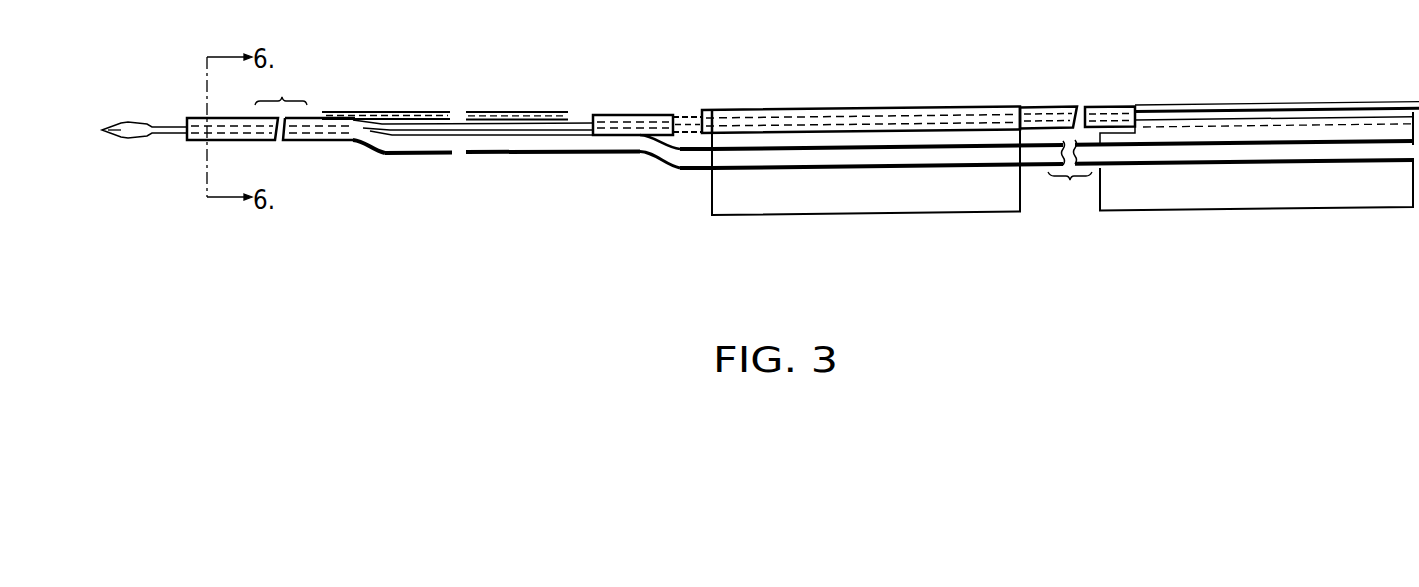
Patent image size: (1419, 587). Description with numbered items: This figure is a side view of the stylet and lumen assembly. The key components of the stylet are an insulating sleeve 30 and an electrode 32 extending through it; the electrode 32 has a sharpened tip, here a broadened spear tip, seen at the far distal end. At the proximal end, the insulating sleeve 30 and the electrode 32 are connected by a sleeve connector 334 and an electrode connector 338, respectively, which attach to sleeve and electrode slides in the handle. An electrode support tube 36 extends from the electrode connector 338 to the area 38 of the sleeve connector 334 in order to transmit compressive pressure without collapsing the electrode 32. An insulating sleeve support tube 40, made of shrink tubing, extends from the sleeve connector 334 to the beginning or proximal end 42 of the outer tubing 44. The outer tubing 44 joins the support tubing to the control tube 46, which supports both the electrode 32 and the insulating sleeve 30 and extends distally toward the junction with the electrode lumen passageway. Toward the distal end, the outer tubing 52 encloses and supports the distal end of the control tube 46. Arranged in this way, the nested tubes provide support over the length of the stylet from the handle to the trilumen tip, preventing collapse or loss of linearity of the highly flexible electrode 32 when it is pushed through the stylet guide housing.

The insulating sleeve 30 is at (290, 141).
The electrode 32 is at (133, 140).
The electrode support tube 36 is at (1072, 101).
The area of the sleeve connector 38 is at (772, 101).
The insulating sleeve support tube 40 is at (712, 101).
The proximal end of the outer tubing 42 is at (672, 106).
The outer tubing 44 is at (632, 113).
The control tube 46 is at (582, 119).
The outer tubing 52 is at (399, 105).
The sleeve connector 334 is at (847, 215).
The electrode connector 338 is at (1295, 208).